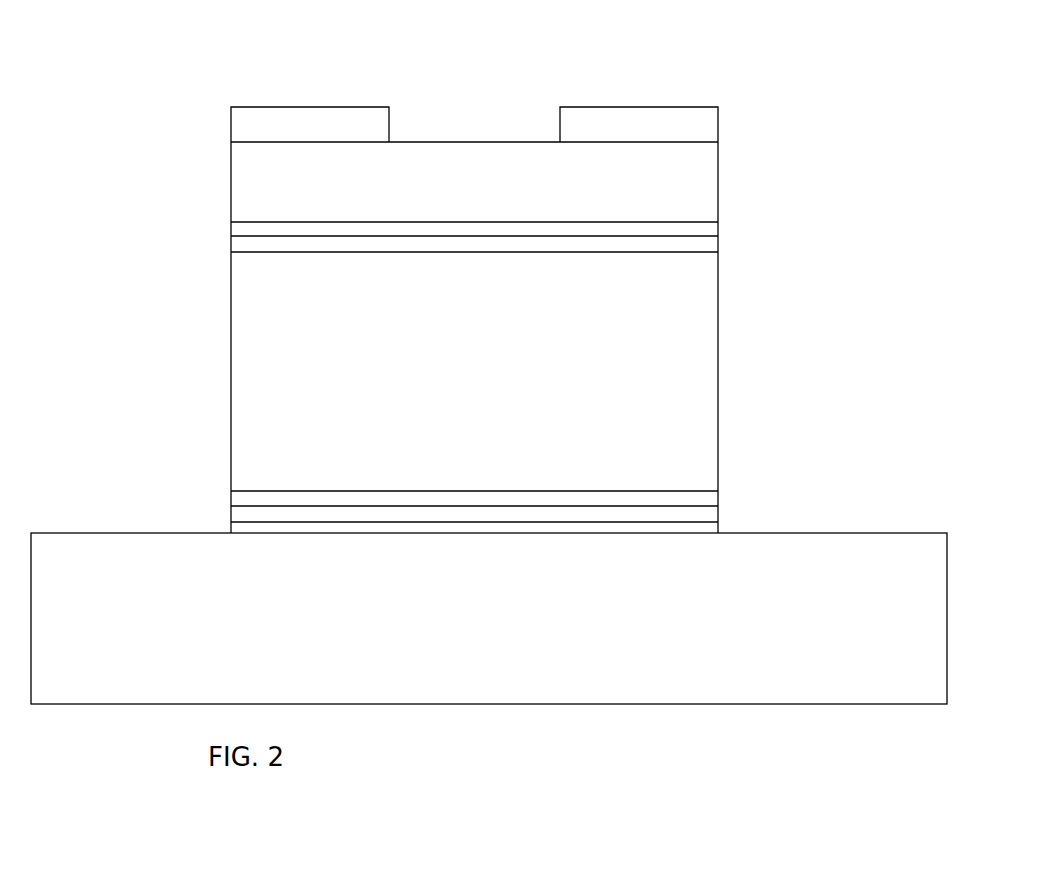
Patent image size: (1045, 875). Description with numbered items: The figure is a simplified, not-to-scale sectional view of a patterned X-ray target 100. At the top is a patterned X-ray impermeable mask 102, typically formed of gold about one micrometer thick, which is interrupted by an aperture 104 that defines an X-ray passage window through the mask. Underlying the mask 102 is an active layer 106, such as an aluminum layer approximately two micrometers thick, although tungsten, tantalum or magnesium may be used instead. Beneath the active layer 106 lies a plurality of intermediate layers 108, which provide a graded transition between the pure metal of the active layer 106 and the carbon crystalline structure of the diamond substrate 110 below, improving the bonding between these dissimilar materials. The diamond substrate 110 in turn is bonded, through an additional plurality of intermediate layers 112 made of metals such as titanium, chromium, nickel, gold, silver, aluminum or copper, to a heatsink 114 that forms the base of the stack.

The patterned X-ray target 100 is at (748, 70).
The patterned X-ray impermeable mask 102 is at (603, 123).
The aperture 104 is at (452, 126).
The active layer 106 is at (692, 163).
The intermediate layers 108 is at (720, 222).
The diamond substrate 110 is at (677, 358).
The intermediate layers 112 is at (722, 488).
The heatsink 114 is at (863, 691).